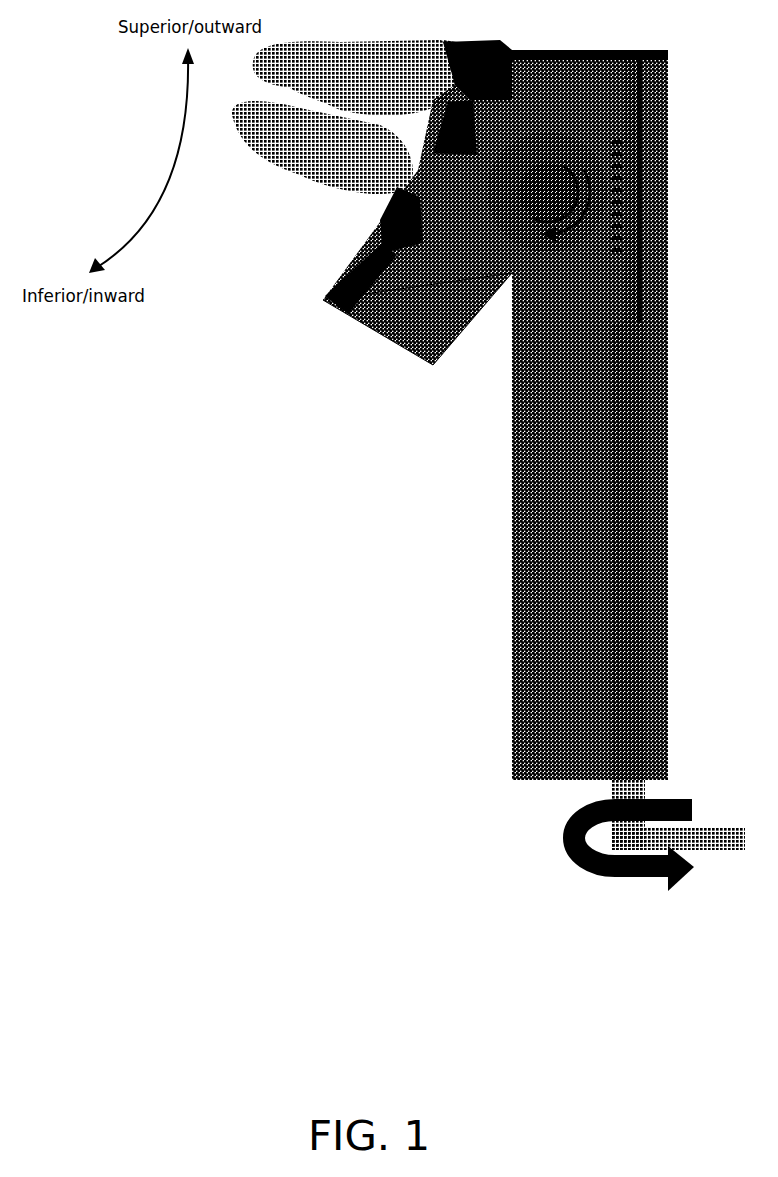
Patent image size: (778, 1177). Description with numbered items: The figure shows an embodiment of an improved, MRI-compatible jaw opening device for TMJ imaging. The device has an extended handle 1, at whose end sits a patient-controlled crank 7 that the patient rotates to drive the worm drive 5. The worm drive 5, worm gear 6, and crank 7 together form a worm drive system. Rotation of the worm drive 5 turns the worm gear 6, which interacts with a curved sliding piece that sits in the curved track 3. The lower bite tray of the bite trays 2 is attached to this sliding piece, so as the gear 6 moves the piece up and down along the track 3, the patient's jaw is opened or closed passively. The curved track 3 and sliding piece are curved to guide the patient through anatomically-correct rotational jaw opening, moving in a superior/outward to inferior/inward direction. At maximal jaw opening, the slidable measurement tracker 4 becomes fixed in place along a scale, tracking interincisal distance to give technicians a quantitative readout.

The extended handle 1 is at (590, 415).
The bite trays 2 is at (347, 117).
The curved track 3 is at (455, 128).
The slidable measurement tracker 4 is at (401, 220).
The worm drive 5 is at (638, 451).
The worm gear 6 is at (547, 192).
The crank 7 is at (659, 839).